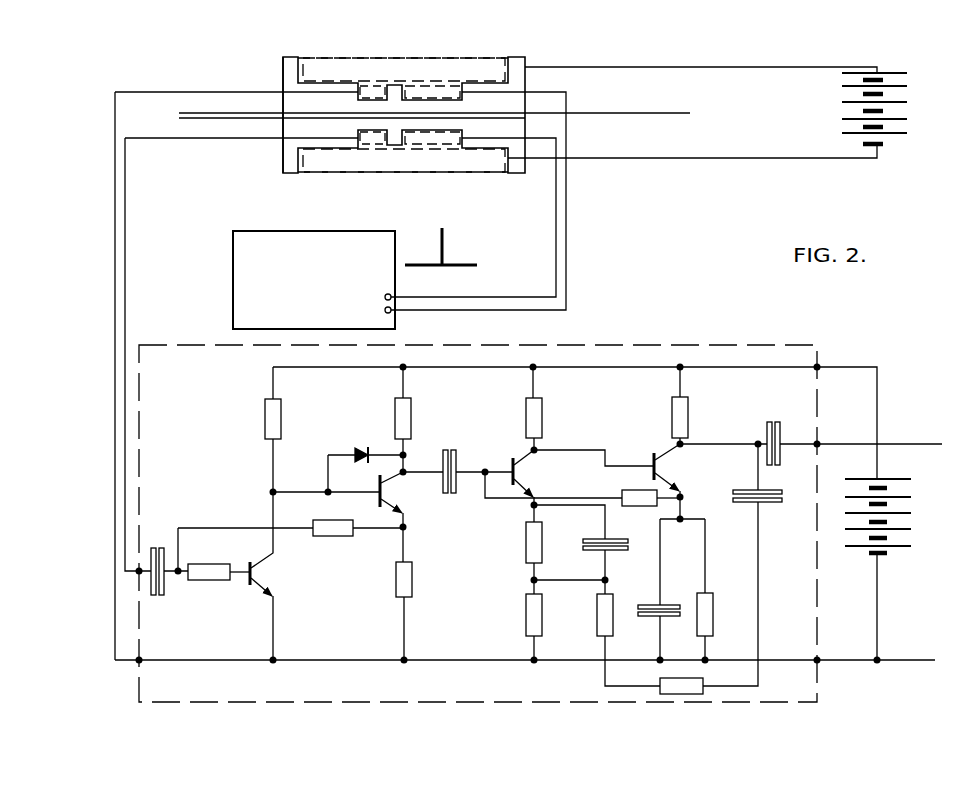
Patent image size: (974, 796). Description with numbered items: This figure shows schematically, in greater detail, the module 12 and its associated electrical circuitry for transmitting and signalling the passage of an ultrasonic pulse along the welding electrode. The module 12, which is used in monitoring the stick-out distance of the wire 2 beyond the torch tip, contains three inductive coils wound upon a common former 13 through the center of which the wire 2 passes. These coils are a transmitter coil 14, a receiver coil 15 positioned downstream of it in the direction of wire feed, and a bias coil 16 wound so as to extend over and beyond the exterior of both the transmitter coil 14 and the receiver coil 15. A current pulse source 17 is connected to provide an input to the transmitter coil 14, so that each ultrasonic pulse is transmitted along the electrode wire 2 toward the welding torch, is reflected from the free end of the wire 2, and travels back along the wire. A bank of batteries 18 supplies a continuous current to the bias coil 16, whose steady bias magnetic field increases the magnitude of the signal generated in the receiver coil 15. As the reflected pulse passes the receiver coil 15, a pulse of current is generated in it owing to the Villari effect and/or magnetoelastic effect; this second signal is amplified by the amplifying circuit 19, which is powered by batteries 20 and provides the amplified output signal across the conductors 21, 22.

The wire 2 is at (647, 113).
The module 12 is at (533, 63).
The common former 13 is at (283, 72).
The transmitter coil 14 is at (435, 140).
The receiver coil 15 is at (373, 142).
The bias coil 16 is at (403, 68).
The current pulse source 17 is at (243, 252).
The bank of batteries 18 is at (885, 99).
The amplifying circuit 19 is at (136, 689).
The batteries 20 is at (897, 537).
The conductor 21 is at (905, 440).
The conductor 22 is at (846, 660).